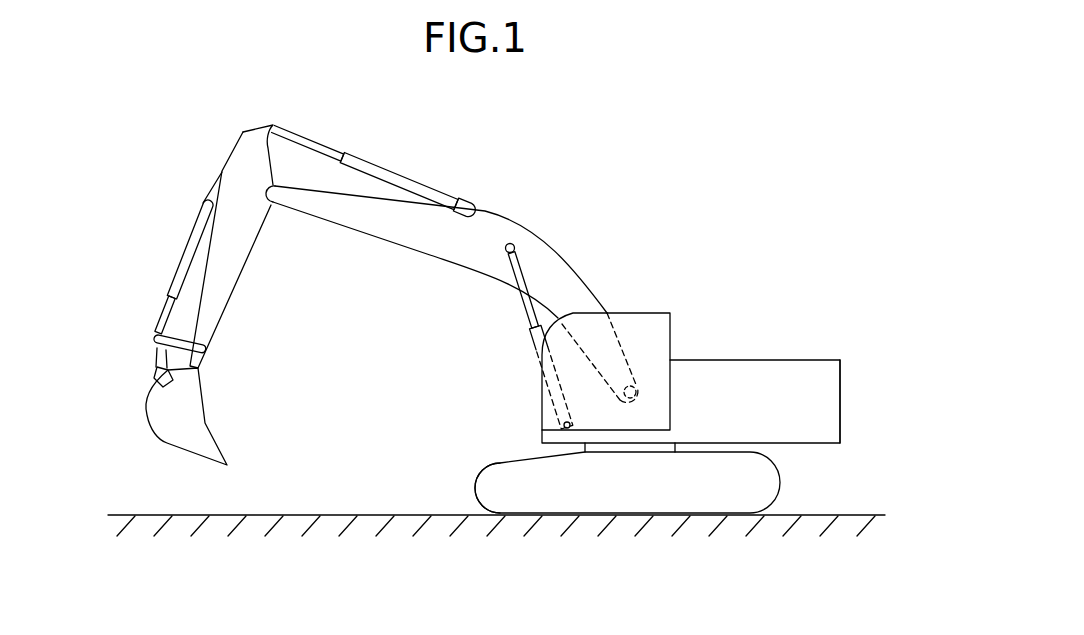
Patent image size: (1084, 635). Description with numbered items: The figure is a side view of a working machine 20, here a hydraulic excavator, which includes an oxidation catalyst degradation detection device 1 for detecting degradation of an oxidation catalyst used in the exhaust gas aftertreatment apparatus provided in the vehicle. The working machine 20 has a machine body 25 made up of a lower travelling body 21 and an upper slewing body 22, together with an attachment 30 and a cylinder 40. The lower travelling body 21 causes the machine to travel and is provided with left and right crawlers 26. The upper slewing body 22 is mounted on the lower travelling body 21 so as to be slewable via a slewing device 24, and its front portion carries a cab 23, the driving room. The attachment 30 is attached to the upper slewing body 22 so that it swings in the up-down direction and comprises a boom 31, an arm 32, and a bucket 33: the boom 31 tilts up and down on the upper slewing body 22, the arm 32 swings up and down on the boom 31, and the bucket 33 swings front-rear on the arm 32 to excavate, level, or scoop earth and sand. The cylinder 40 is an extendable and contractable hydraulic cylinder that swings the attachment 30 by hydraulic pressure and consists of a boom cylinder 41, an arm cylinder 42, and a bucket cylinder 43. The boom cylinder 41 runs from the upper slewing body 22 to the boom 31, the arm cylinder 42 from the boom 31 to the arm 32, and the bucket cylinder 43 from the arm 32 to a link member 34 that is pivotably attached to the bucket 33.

The degradation detection device 1 is at (703, 341).
The working machine 20 is at (716, 249).
The lower travelling body 21 is at (770, 488).
The upper slewing body 22 is at (813, 370).
The cab 23 is at (540, 413).
The slewing device 24 is at (582, 450).
The machine body 25 is at (848, 418).
The crawlers 26 is at (488, 497).
The attachment 30 is at (572, 222).
The boom 31 is at (383, 240).
The arm 32 is at (248, 237).
The bucket 33 is at (182, 442).
The link member 34 is at (155, 352).
The cylinder 40 is at (308, 255).
The boom cylinder 41 is at (533, 336).
The arm cylinder 42 is at (381, 170).
The bucket cylinder 43 is at (181, 265).